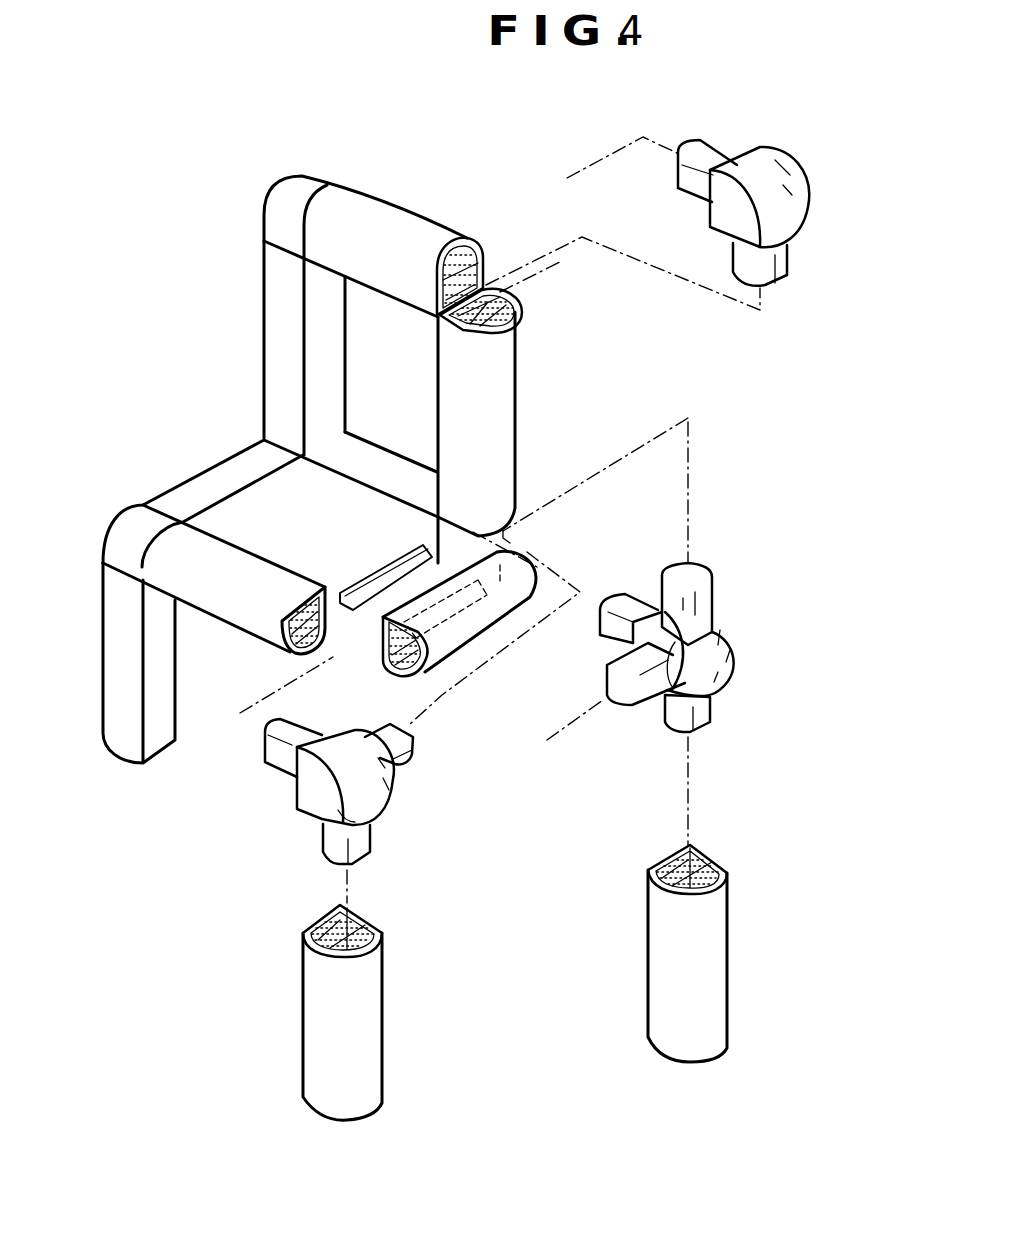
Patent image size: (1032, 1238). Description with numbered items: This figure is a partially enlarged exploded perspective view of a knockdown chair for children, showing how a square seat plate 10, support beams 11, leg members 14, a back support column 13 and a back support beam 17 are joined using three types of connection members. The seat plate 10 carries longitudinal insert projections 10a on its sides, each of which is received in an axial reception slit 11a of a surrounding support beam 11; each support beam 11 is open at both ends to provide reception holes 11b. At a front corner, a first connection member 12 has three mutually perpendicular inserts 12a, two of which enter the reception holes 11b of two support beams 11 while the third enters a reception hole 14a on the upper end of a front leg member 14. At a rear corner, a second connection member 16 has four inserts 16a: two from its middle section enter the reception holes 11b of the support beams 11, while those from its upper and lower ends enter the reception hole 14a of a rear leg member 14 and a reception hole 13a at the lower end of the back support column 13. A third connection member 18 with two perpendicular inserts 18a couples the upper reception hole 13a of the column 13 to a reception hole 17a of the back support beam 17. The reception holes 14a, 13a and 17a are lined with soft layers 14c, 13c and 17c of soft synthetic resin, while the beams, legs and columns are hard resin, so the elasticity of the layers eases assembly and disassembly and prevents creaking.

The seat plate 10 is at (277, 494).
The insert projection 10a is at (353, 612).
The support beam 11 is at (357, 460).
The reception slit 11a is at (437, 618).
The reception hole 11b is at (387, 670).
The first connection member 12 is at (367, 844).
The insert 12a is at (397, 750).
The back support column 13 is at (502, 422).
The reception hole 13a is at (513, 310).
The soft layer 13c is at (522, 315).
The leg member 14 is at (123, 660).
The reception hole 14a is at (338, 930).
The soft layer 14c is at (308, 950).
The second connection member 16 is at (737, 658).
The insert 16a is at (707, 603).
The back support beam 17 is at (373, 247).
The reception hole 17a is at (486, 260).
The soft layer 17c is at (467, 292).
The third connection member 18 is at (792, 170).
The insert 18a is at (713, 160).